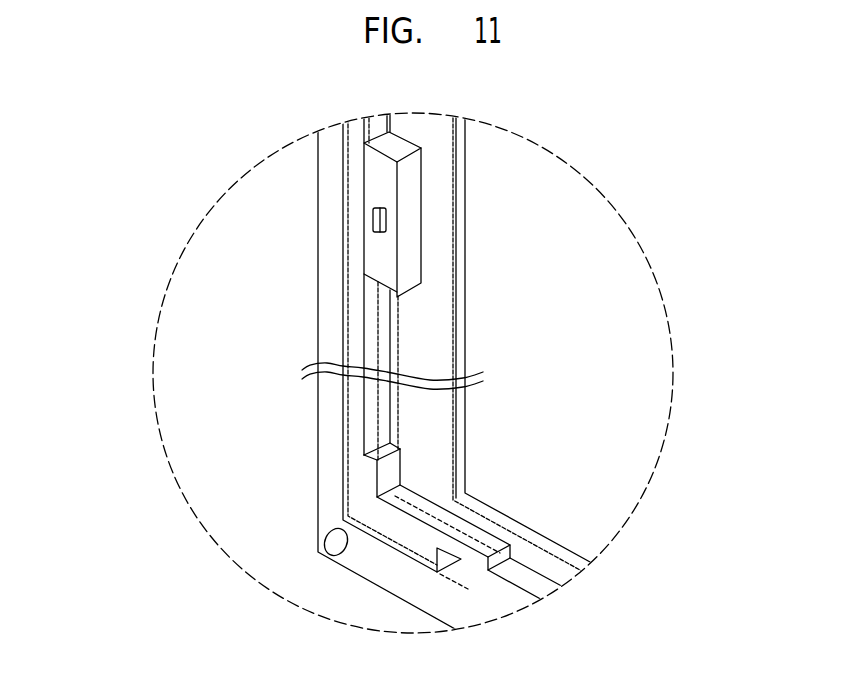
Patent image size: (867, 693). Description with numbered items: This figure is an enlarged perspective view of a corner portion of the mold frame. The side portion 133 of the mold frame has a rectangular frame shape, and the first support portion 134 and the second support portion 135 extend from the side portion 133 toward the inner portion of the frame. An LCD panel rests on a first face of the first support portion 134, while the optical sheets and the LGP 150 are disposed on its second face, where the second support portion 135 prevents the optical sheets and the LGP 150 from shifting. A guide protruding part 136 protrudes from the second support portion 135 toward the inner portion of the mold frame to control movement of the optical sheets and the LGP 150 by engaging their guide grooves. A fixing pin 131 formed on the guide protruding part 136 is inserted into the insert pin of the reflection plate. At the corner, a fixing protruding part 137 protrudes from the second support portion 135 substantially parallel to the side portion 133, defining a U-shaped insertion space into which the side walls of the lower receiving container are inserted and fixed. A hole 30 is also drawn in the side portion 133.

The hole 30 is at (330, 539).
The fixing pin 131 is at (373, 218).
The side portion 133 is at (332, 438).
The first support portion 134 is at (435, 257).
The second support portion 135 is at (357, 323).
The guide protruding part 136 is at (412, 200).
The fixing protruding part 137 is at (487, 547).
The LGP 150 is at (380, 408).